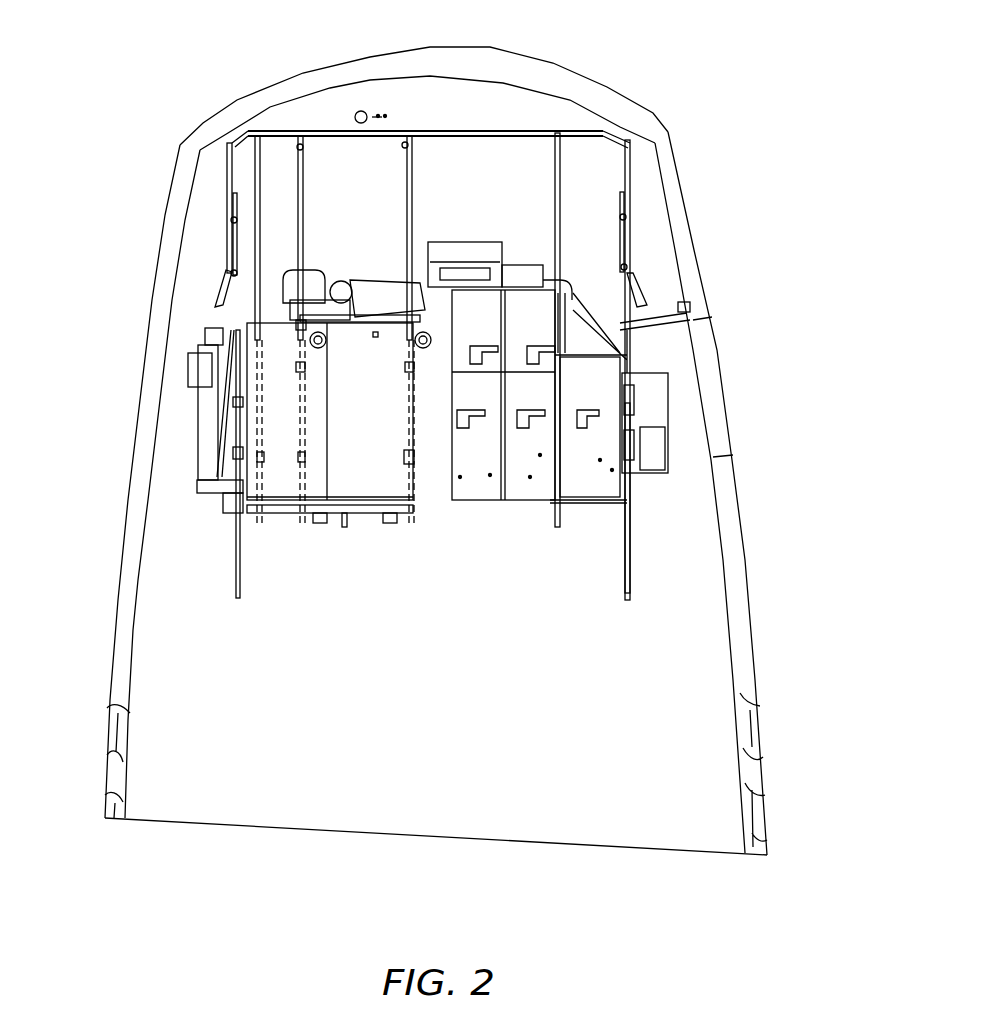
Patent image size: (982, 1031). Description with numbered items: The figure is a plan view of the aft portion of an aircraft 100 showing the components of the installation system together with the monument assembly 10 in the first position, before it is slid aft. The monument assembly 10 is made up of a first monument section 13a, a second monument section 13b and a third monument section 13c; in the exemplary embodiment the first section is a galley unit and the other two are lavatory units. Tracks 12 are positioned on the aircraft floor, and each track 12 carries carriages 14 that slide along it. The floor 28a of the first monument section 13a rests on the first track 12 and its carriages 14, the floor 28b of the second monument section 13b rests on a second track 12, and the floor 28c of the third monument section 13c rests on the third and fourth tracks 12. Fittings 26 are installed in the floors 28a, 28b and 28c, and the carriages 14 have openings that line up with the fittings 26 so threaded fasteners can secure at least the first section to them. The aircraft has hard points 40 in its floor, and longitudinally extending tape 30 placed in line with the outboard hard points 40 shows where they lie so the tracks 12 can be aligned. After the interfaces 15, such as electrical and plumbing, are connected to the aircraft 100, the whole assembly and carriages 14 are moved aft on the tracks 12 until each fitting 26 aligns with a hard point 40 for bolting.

The aircraft 100 is at (285, 103).
The monument assembly 10 is at (603, 347).
The tracks 12 is at (303, 527).
The first monument section 13a is at (620, 480).
The second monument section 13b is at (365, 485).
The third monument section 13c is at (243, 513).
The carriages 14 is at (407, 367).
The interfaces 15 is at (268, 286).
The fittings 26 is at (303, 327).
The floor of the first monument section 28a is at (533, 473).
The floor of the second monument section 28b is at (374, 458).
The floor of the third monument section 28c is at (245, 345).
The tape 30 is at (237, 583).
The hard points 40 is at (407, 270).